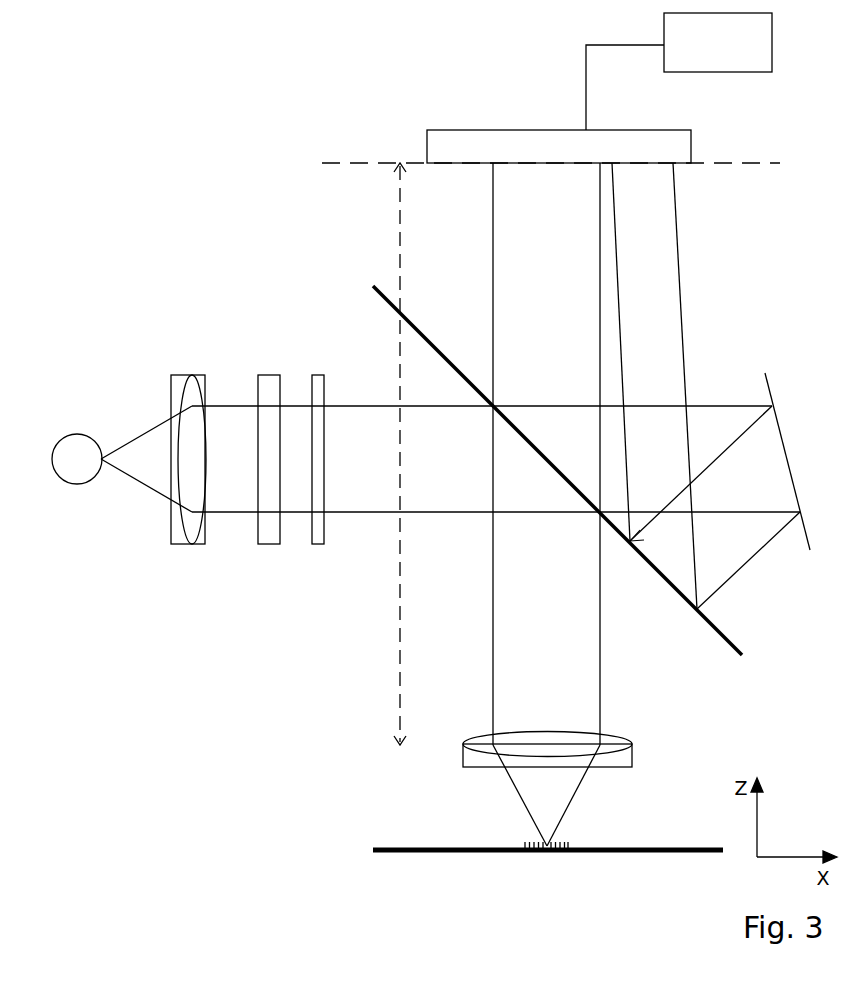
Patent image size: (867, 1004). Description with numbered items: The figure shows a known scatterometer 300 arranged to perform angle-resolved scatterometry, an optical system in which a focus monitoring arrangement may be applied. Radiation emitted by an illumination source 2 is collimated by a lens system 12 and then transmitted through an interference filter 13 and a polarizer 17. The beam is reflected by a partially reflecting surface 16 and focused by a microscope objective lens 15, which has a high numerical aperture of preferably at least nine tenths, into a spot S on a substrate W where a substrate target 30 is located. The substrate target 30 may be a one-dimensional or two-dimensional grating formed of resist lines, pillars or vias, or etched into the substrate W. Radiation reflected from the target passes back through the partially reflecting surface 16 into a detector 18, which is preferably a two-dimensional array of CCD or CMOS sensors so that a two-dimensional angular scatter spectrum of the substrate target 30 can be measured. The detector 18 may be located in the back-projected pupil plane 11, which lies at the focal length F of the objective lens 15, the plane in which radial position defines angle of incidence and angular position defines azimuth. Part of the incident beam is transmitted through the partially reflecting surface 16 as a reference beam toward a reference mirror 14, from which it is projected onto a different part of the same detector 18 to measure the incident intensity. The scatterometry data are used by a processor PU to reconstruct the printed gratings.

The illumination source 2 is at (71, 470).
The back-projected pupil plane 11 is at (717, 162).
The lens system 12 is at (193, 375).
The interference filter 13 is at (267, 375).
The reference mirror 14 is at (772, 393).
The microscope objective lens 15 is at (480, 767).
The partially reflecting surface 16 is at (718, 643).
The polarizer 17 is at (320, 375).
The detector 18 is at (478, 128).
The substrate target 30 is at (543, 860).
The scatterometer 300 is at (270, 648).
The processor PU is at (679, 71).
The substrate W is at (661, 848).
The spot S is at (535, 835).
The focal length F is at (394, 454).